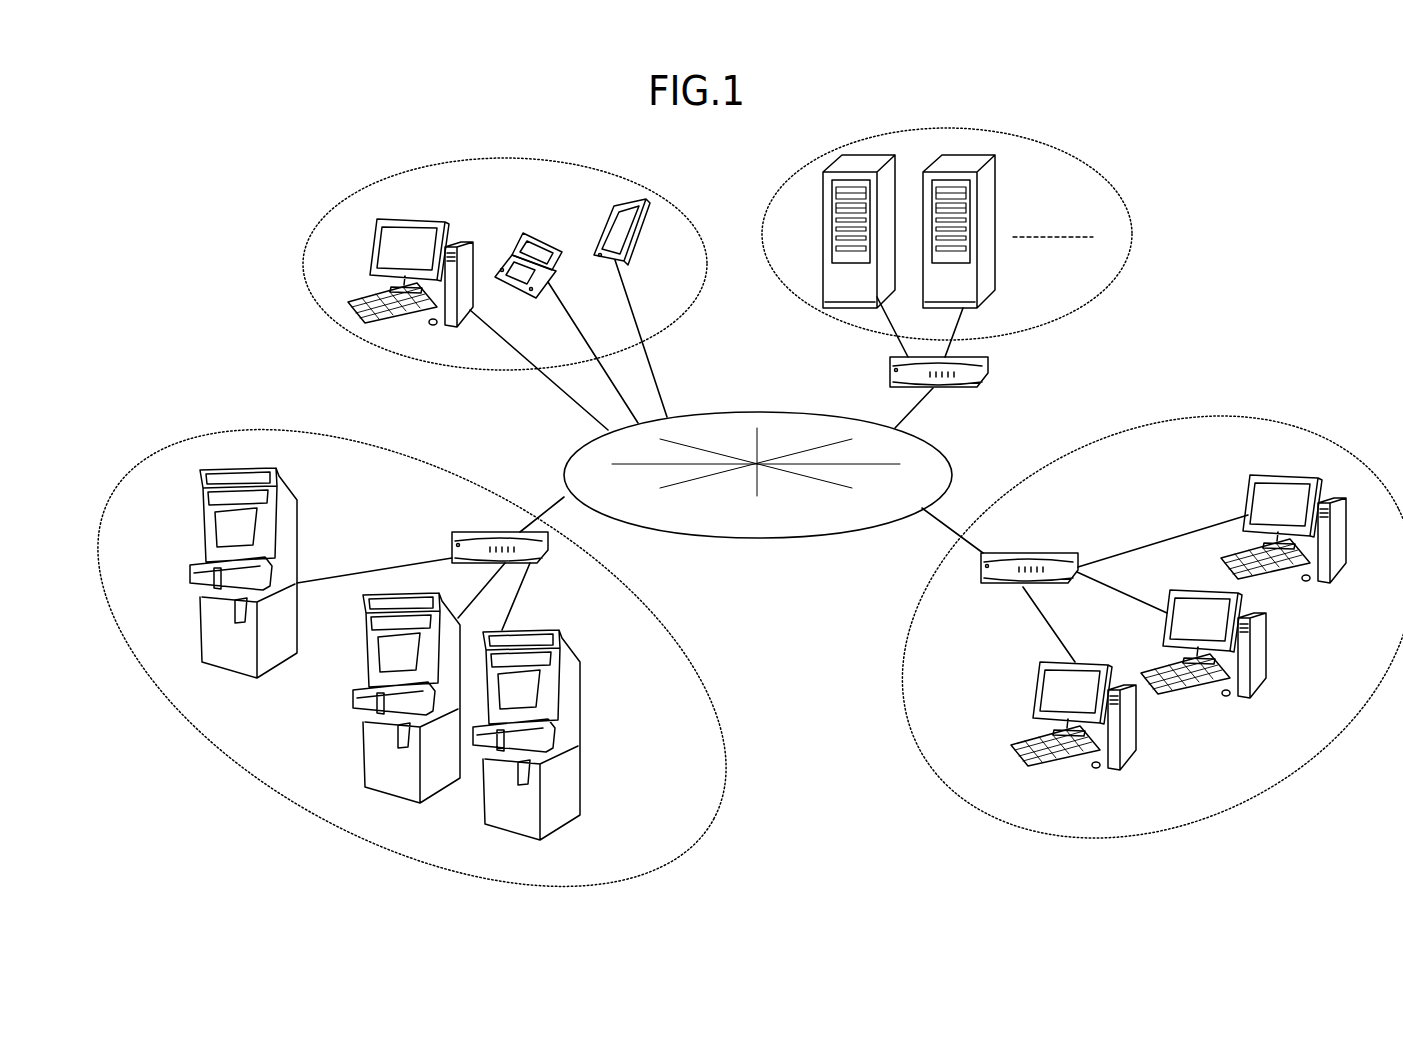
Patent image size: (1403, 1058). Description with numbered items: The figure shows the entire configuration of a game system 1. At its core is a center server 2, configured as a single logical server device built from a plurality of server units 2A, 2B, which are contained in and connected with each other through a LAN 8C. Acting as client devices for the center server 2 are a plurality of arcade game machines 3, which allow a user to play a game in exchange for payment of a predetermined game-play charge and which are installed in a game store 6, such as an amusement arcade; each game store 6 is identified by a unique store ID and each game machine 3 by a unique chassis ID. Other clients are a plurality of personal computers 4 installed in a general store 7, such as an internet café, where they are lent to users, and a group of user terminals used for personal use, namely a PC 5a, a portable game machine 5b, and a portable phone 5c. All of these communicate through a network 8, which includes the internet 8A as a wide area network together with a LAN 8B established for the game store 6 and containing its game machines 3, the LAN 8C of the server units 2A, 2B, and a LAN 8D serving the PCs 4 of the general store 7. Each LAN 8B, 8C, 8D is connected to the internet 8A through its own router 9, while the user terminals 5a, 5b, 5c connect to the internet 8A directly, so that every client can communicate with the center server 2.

The game system 1 is at (1228, 282).
The center server 2 is at (1118, 190).
The server unit 2A is at (847, 163).
The server unit 2B is at (935, 160).
The game machine 3 is at (498, 808).
The personal computer 4 is at (1343, 563).
The PC 5a is at (380, 220).
The portable game machine 5b is at (535, 245).
The portable phone 5c is at (645, 202).
The game store 6 is at (364, 433).
The store 7 is at (1279, 432).
The network 8 is at (570, 440).
The internet 8A is at (697, 412).
The LAN 8B is at (590, 595).
The LAN 8C is at (968, 328).
The LAN 8D is at (1148, 508).
The router 9 is at (892, 372).